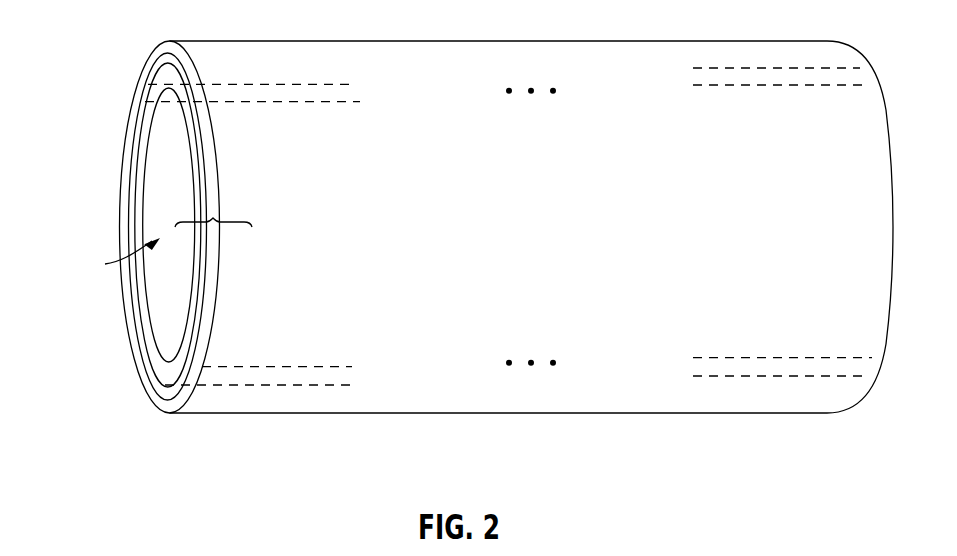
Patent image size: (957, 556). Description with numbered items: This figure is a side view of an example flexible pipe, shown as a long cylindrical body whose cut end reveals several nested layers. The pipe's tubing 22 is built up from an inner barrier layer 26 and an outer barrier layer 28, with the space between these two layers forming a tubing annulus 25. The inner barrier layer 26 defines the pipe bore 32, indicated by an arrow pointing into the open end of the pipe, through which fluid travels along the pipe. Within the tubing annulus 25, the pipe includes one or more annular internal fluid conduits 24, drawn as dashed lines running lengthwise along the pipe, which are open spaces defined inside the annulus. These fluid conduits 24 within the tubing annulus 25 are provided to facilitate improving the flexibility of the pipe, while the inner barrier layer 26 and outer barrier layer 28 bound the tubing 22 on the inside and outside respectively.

The tubing 22 is at (213, 218).
The fluid conduit 24 is at (147, 101).
The tubing annulus 25 is at (143, 370).
The inner barrier layer 26 is at (150, 355).
The outer barrier layer 28 is at (153, 400).
The pipe bore 32 is at (118, 261).